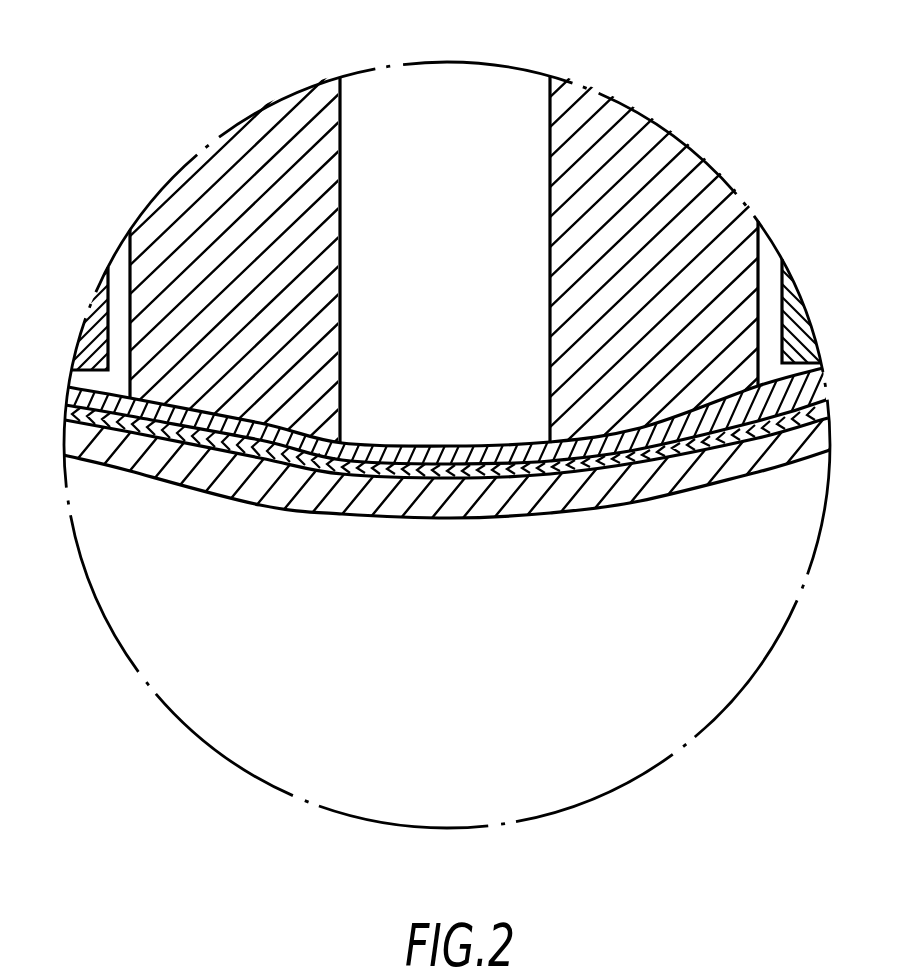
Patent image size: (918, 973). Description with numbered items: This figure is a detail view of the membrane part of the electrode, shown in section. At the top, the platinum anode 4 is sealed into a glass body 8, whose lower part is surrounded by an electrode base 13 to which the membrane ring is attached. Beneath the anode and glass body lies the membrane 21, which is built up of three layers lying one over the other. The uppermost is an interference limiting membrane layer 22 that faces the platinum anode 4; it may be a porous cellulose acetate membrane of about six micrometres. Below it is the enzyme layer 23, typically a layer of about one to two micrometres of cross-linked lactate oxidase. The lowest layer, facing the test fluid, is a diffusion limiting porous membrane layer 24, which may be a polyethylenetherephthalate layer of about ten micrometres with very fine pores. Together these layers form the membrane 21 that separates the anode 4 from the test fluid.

The platinum anode 4 is at (510, 95).
The glass body 8 is at (263, 138).
The electrode base 13 is at (95, 330).
The membrane 21 is at (456, 488).
The interference limiting membrane layer 22 is at (422, 457).
The enzyme layer 23 is at (533, 474).
The diffusion limiting porous membrane layer 24 is at (637, 483).